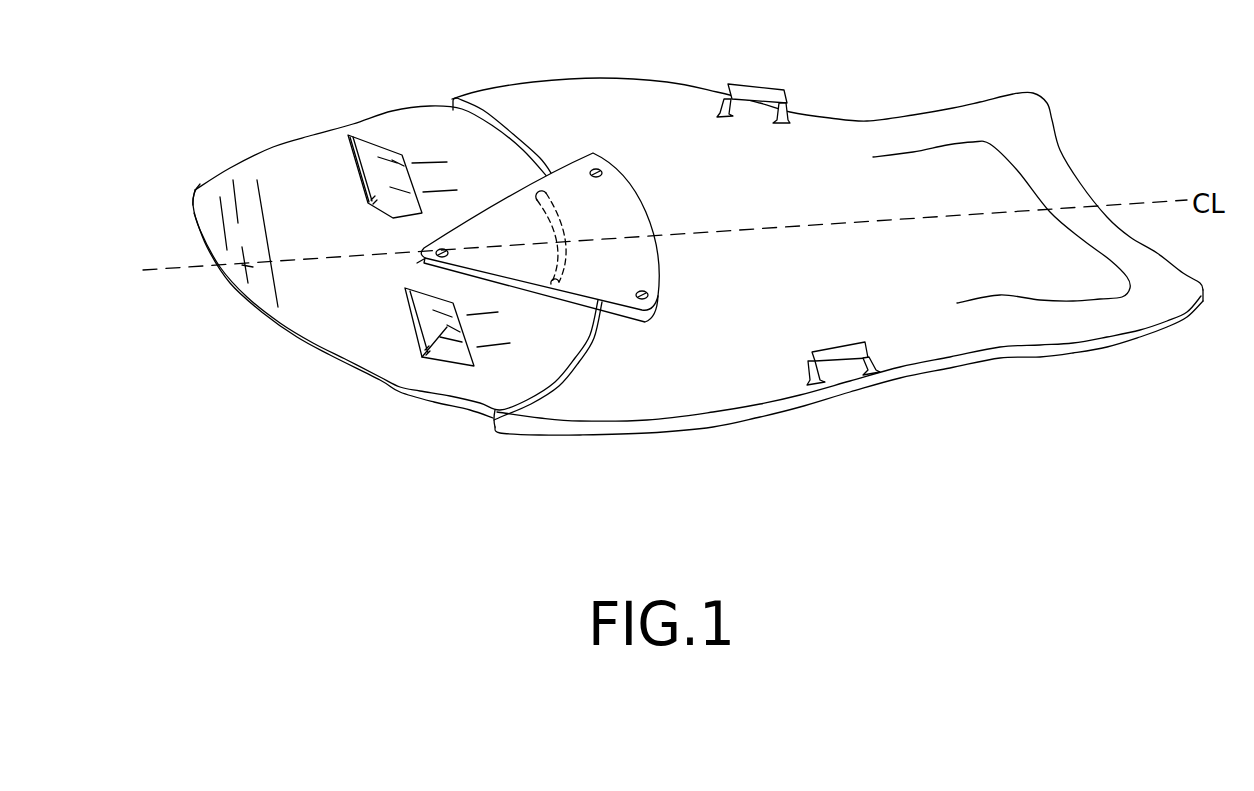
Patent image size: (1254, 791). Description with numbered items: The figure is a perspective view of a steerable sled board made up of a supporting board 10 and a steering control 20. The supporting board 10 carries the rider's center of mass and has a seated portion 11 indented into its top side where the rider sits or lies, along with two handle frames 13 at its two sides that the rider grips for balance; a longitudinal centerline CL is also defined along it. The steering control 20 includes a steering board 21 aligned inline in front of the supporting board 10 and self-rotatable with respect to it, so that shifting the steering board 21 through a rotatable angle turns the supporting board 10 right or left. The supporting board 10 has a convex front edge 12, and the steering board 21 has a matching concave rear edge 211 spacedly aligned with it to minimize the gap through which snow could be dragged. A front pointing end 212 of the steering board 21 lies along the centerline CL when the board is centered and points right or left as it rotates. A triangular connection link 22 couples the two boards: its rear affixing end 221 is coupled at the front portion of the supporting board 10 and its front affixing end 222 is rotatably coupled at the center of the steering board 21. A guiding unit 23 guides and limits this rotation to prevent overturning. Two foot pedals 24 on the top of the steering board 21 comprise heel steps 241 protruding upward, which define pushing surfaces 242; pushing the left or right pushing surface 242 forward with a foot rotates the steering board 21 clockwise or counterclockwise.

The supporting board 10 is at (1087, 310).
The seated portion 11 is at (967, 197).
The convex front edge 12 is at (515, 135).
The handle frames 13 is at (763, 97).
The steering control 20 is at (282, 422).
The steering board 21 is at (313, 317).
The concave rear edge 211 is at (470, 107).
The front pointing end 212 is at (177, 200).
The connection link 22 is at (608, 190).
The rear affixing end 221 is at (593, 152).
The front affixing end 222 is at (417, 268).
The guiding unit 23 is at (573, 270).
The foot pedals 24 is at (367, 103).
The heel steps 241 is at (397, 175).
The pushing surfaces 242 is at (350, 136).